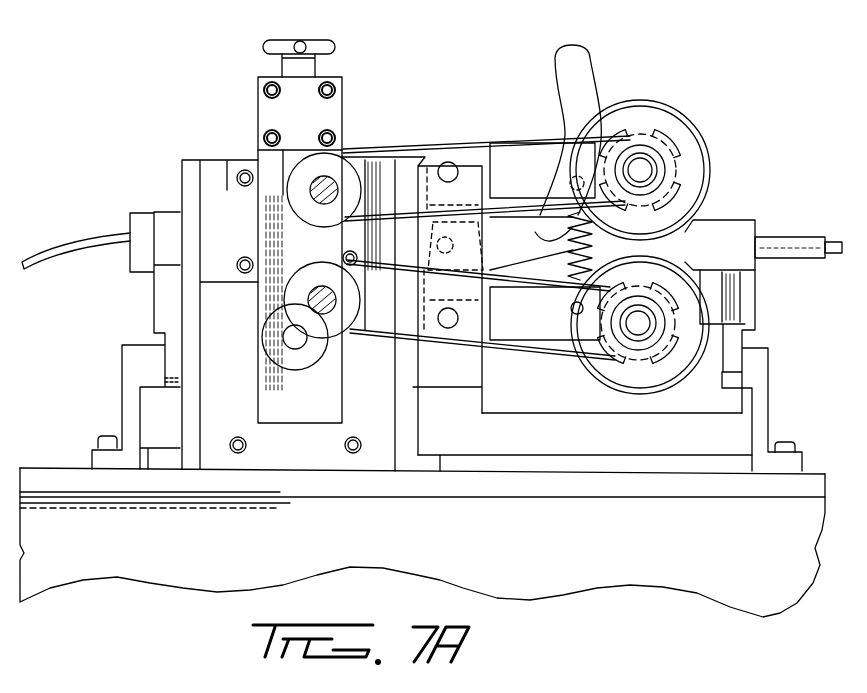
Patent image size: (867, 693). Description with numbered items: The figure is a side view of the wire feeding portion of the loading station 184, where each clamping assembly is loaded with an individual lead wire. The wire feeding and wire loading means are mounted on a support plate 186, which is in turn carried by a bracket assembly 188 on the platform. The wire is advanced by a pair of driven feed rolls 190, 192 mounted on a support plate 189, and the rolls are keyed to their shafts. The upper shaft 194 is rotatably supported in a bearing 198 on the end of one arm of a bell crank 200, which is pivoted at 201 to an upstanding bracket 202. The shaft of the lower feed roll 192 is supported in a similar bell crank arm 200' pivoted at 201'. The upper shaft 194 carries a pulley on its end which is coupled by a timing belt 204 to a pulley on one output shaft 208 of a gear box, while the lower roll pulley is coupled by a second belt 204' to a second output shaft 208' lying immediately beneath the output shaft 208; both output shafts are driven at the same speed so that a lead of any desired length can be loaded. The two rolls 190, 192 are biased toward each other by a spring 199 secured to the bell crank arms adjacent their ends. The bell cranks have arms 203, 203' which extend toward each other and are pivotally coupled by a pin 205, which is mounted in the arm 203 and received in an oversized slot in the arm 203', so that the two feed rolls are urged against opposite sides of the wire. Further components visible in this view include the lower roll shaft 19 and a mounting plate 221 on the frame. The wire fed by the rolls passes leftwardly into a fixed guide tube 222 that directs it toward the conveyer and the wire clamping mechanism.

The shaft 19 is at (637, 323).
The loading station 184 is at (766, 140).
The support plate 186 is at (651, 496).
The bracket assembly 188 is at (217, 558).
The support plate 189 is at (757, 327).
The feed roll 190 is at (685, 137).
The feed roll 192 is at (665, 373).
The upper shaft 194 is at (641, 170).
The bearing 198 is at (668, 179).
The spring 199 is at (573, 237).
The bell crank 200 is at (542, 152).
The bell crank arm 200' is at (545, 313).
The pivot 201 is at (453, 144).
The pivot 201' is at (450, 346).
The upstanding bracket 202 is at (480, 375).
The arm 203 is at (452, 190).
The arm 203' is at (451, 300).
The timing belt 204 is at (486, 167).
The lower drive belt 204' is at (481, 322).
The pin 205 is at (455, 246).
The output shaft 208 is at (324, 200).
The output shaft 208' is at (311, 330).
The mounting plate 221 is at (321, 119).
The fixed guide tube 222 is at (796, 242).